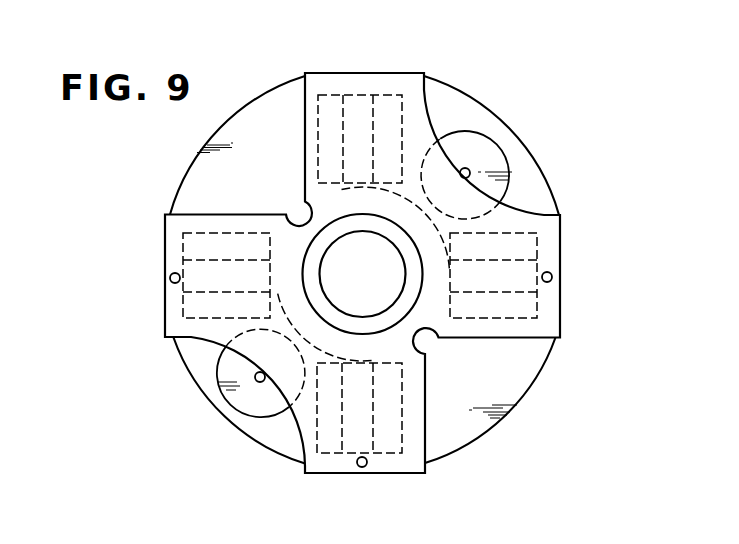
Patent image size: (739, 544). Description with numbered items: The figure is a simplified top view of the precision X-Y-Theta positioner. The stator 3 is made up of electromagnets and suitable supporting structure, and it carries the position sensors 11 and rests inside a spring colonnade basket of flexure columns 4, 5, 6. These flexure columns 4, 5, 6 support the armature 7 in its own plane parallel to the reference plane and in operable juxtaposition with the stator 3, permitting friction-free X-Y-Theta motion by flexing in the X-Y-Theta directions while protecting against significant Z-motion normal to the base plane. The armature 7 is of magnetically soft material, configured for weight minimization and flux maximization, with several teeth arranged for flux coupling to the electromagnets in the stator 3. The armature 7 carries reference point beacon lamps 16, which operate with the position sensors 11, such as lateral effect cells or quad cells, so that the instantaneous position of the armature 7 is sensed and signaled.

The stator 3 is at (527, 399).
The flexure column 4 is at (553, 274).
The flexure column 5 is at (362, 468).
The flexure column 6 is at (169, 278).
The armature 7 is at (553, 238).
The position sensor 11 is at (503, 147).
The reference point beacon lamp 16 is at (465, 168).